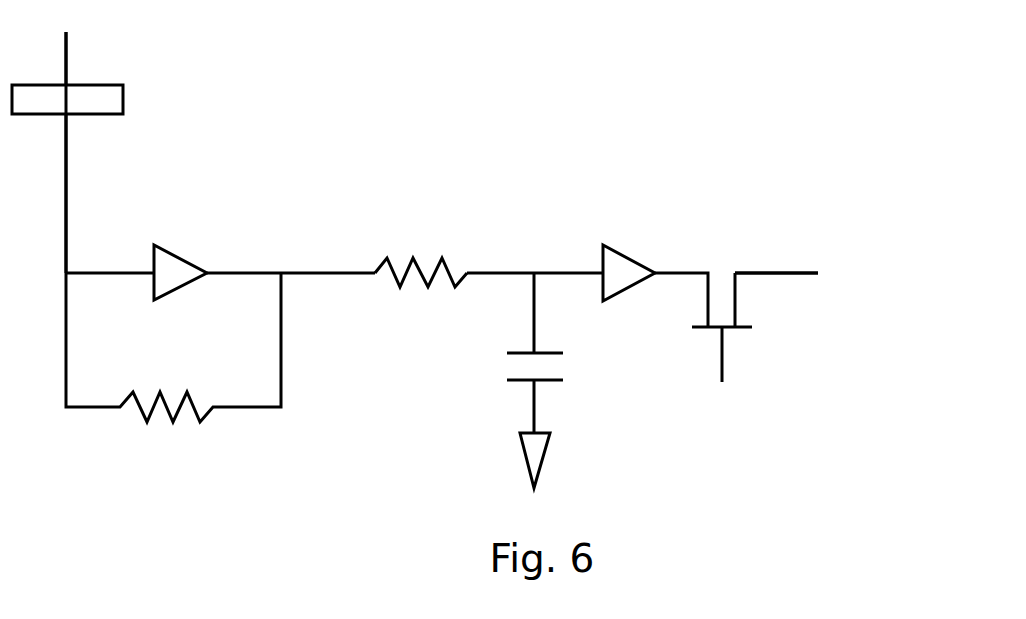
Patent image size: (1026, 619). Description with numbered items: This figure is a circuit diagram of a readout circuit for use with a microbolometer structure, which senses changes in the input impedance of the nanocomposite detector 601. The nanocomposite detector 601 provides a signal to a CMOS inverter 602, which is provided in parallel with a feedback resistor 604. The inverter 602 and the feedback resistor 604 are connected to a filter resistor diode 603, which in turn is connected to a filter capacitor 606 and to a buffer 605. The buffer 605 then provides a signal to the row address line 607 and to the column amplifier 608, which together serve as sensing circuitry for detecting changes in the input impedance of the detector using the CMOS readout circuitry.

The nanocomposite detector 601 is at (110, 90).
The CMOS inverter 602 is at (167, 233).
The filter resistor diode 603 is at (416, 220).
The feedback resistor 604 is at (173, 390).
The buffer 605 is at (617, 248).
The filter capacitor 606 is at (474, 380).
The row address line 607 is at (727, 365).
The column amplifier 608 is at (830, 277).